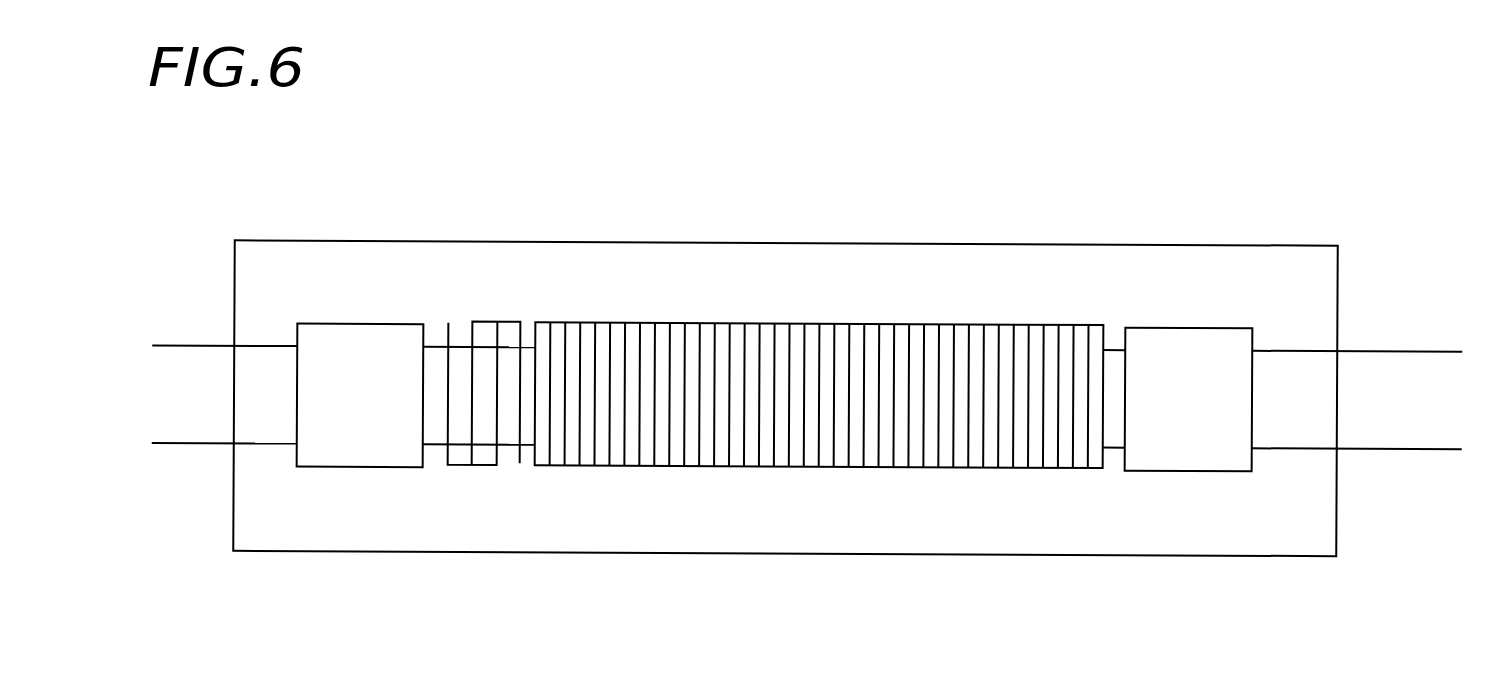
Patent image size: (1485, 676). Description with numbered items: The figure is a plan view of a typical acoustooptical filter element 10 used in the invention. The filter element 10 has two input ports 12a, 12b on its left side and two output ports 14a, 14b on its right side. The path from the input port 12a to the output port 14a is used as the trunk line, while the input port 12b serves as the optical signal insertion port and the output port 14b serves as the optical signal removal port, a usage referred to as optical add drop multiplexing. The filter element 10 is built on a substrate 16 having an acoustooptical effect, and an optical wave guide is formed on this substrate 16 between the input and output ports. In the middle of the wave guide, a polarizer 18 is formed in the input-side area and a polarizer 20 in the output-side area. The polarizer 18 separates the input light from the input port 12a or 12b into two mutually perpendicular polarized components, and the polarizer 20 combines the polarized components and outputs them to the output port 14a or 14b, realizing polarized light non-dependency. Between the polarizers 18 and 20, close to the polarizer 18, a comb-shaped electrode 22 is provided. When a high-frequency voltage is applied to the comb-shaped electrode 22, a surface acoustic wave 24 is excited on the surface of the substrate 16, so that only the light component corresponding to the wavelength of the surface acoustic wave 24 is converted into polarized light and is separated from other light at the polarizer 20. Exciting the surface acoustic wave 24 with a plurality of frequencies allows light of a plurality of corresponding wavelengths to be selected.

The acoustooptical filter element 10 is at (667, 213).
The input port 12a is at (190, 347).
The input port 12b is at (181, 447).
The output port 14a is at (1395, 347).
The output port 14b is at (1400, 447).
The substrate 16 is at (928, 243).
The polarizer 18 is at (376, 332).
The polarizer 20 is at (1197, 334).
The comb-shaped electrode 22 is at (472, 469).
The surface acoustic wave 24 is at (885, 469).